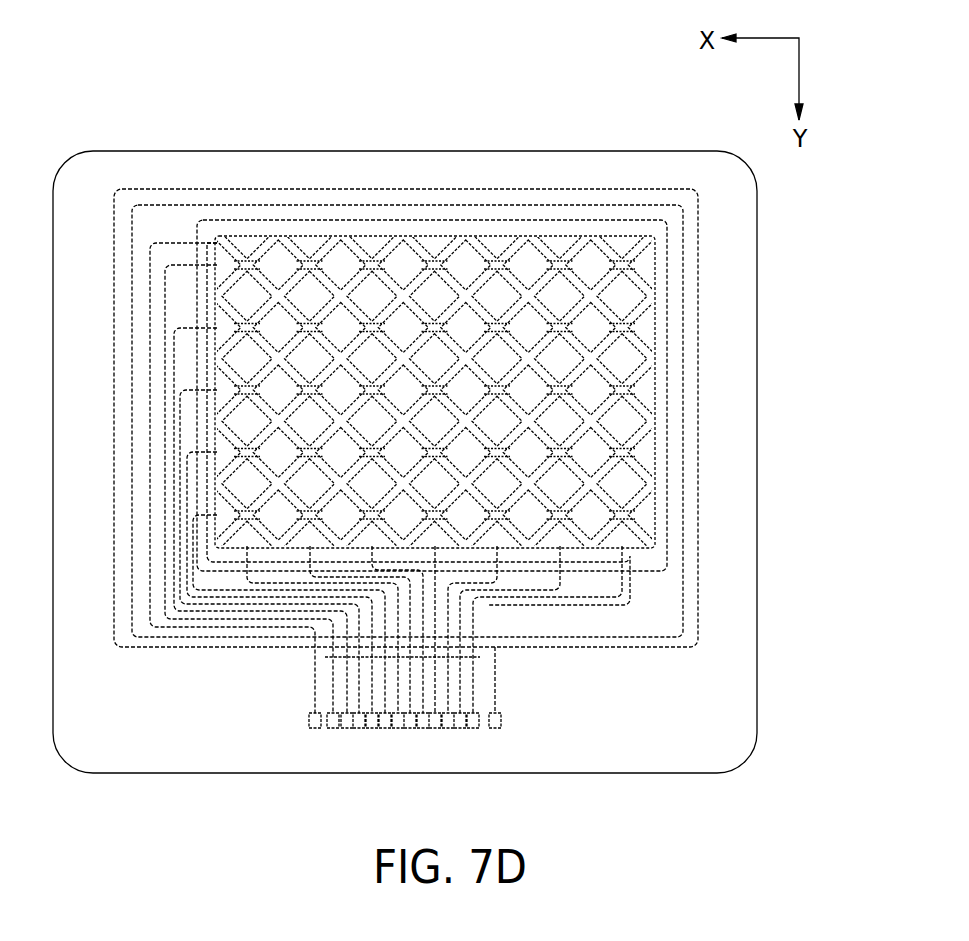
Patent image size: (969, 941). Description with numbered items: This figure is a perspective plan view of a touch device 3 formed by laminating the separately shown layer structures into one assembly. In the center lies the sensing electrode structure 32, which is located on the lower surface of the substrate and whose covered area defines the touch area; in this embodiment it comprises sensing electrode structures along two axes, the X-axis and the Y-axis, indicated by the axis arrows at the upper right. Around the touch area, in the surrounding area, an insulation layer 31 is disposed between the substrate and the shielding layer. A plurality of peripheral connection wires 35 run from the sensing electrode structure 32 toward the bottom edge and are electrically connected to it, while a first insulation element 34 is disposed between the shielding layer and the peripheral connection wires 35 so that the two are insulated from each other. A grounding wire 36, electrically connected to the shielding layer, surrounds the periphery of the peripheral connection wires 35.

The touch device 3 is at (103, 53).
The insulation layer 31 is at (725, 210).
The sensing electrode structure 32 is at (648, 268).
The first insulation element 34 is at (633, 584).
The peripheral connection wires 35 is at (583, 606).
The grounding wire 36 is at (497, 688).